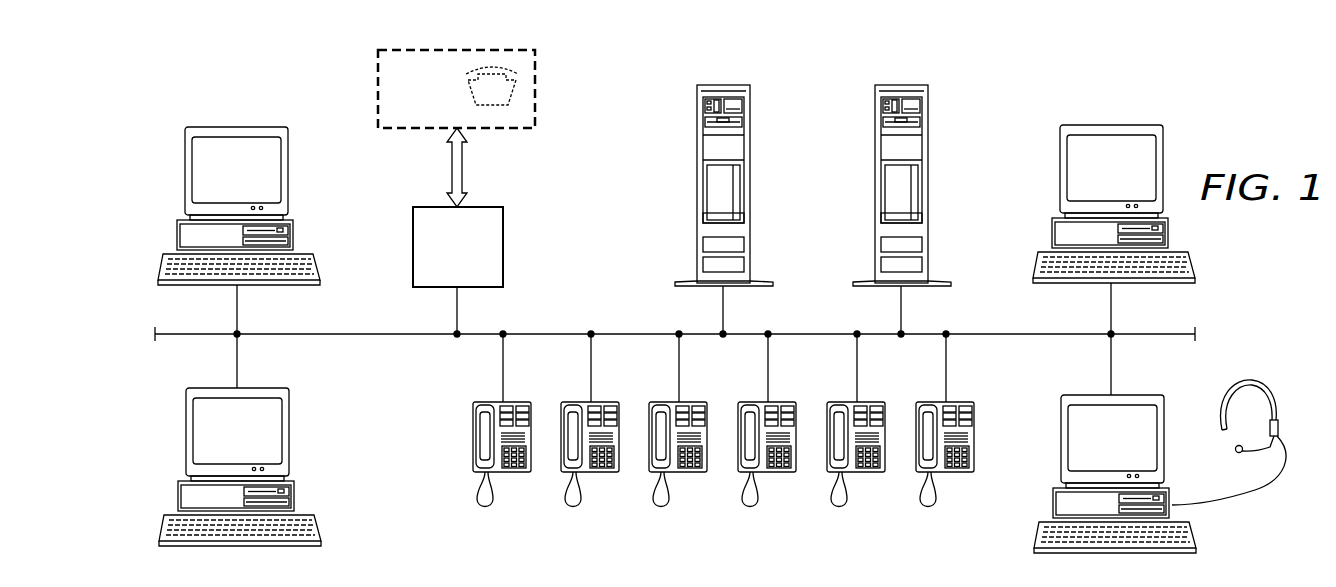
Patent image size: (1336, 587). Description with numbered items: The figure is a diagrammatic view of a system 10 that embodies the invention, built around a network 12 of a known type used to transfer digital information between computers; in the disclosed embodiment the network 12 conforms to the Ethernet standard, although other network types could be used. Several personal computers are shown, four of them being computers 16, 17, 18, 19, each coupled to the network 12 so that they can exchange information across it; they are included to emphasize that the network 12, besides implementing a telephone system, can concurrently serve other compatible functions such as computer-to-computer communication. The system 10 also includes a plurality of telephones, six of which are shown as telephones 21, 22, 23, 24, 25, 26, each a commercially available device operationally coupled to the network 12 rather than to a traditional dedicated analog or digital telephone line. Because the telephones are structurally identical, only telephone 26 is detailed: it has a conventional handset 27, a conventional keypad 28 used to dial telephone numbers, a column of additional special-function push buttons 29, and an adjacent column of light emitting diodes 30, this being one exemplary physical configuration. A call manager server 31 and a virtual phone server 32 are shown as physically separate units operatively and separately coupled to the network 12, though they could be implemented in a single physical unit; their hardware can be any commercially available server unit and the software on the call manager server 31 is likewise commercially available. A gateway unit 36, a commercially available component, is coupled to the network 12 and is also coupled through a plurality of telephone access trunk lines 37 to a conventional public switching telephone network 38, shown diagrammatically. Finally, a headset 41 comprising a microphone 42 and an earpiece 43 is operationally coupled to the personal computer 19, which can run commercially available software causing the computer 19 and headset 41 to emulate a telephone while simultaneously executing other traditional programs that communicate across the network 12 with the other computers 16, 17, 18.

The system 10 is at (230, 82).
The network 12 is at (351, 337).
The personal computer 16 is at (288, 177).
The personal computer 17 is at (289, 432).
The personal computer 18 is at (1060, 175).
The personal computer 19 is at (1092, 395).
The telephone 21 is at (508, 473).
The telephone 22 is at (596, 473).
The telephone 23 is at (684, 473).
The telephone 24 is at (773, 473).
The telephone 25 is at (862, 473).
The telephone 26 is at (961, 428).
The handset 27 is at (926, 408).
The keypad 28 is at (970, 455).
The special-function push buttons 29 is at (951, 406).
The light emitting diodes 30 is at (971, 416).
The call manager server 31 is at (697, 186).
The virtual phone server 32 is at (875, 186).
The gateway unit 36 is at (413, 248).
The telephone access trunk lines 37 is at (451, 170).
The public switching telephone network 38 is at (378, 92).
The headset 41 is at (1278, 400).
The microphone 42 is at (1233, 450).
The earpiece 43 is at (1280, 428).